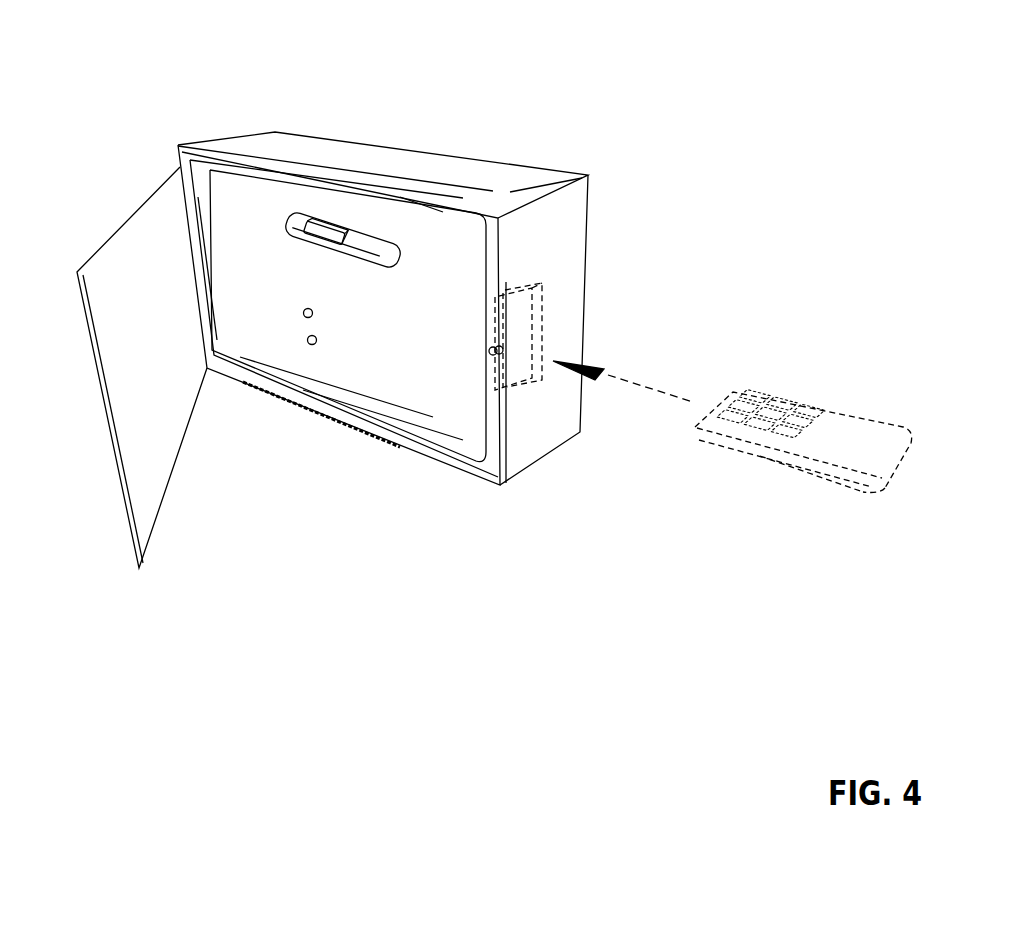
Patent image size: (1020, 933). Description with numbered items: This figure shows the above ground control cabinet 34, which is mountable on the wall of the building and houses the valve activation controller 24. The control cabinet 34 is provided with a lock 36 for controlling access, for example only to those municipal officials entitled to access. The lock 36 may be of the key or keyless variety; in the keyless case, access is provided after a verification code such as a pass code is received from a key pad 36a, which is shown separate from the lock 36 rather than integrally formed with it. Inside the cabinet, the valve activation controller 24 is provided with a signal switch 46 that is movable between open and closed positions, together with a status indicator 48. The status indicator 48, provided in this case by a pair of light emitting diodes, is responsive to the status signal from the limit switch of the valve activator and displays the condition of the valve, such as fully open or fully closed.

The control cabinet 34 is at (468, 115).
The valve activation controller 24 is at (282, 445).
The signal switch 46 is at (273, 225).
The status indicator 48 is at (388, 343).
The lock 36 is at (517, 358).
The key pad 36a is at (850, 427).